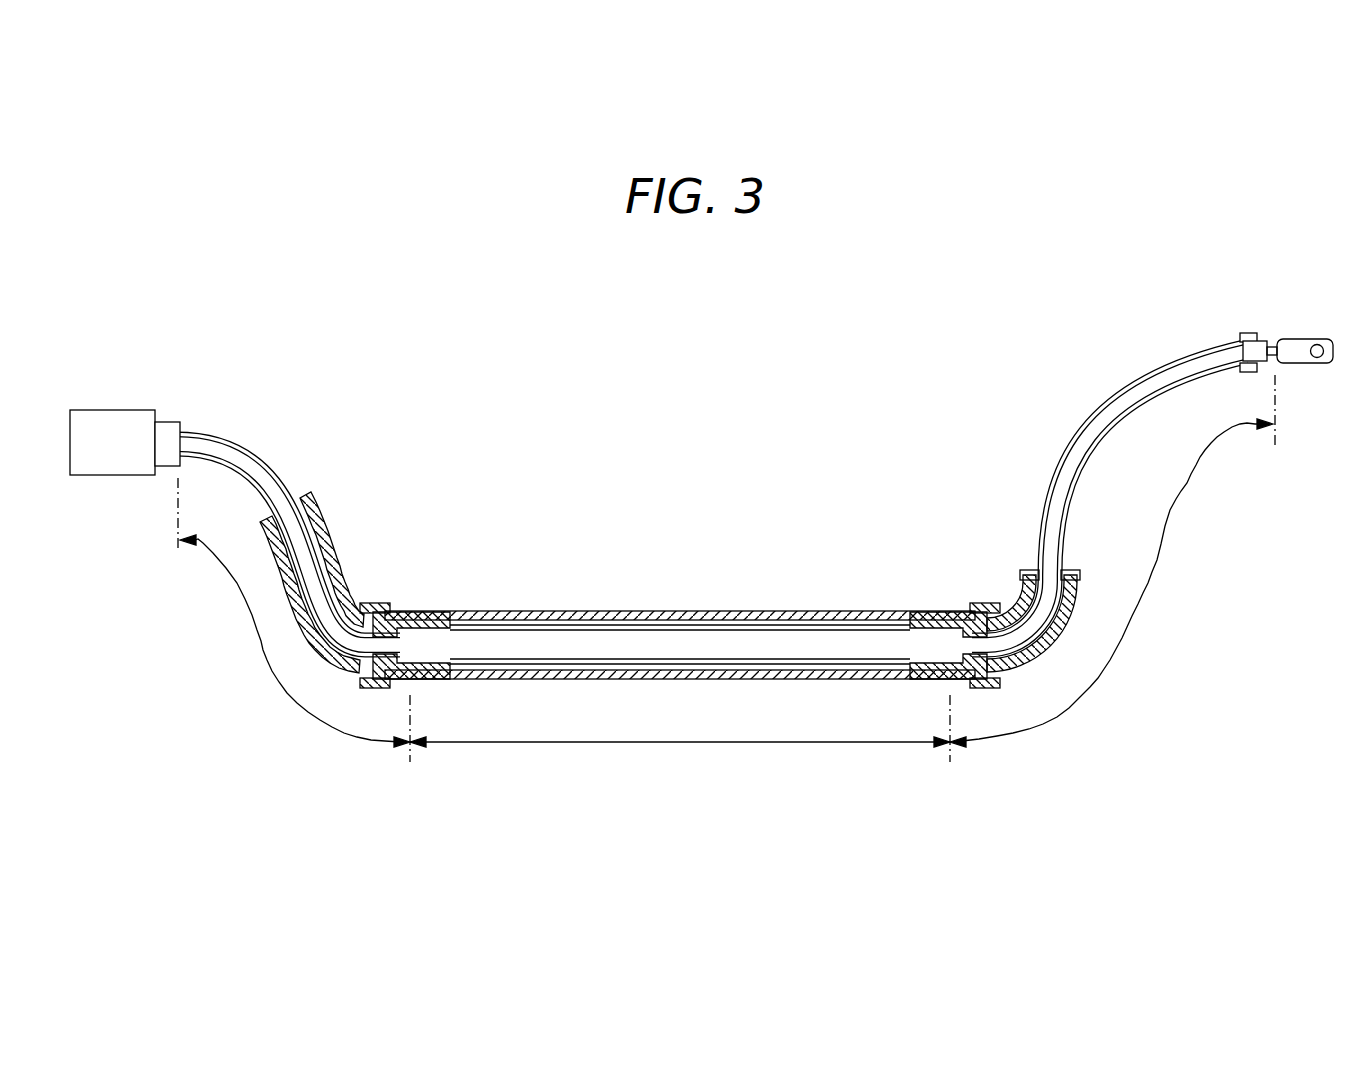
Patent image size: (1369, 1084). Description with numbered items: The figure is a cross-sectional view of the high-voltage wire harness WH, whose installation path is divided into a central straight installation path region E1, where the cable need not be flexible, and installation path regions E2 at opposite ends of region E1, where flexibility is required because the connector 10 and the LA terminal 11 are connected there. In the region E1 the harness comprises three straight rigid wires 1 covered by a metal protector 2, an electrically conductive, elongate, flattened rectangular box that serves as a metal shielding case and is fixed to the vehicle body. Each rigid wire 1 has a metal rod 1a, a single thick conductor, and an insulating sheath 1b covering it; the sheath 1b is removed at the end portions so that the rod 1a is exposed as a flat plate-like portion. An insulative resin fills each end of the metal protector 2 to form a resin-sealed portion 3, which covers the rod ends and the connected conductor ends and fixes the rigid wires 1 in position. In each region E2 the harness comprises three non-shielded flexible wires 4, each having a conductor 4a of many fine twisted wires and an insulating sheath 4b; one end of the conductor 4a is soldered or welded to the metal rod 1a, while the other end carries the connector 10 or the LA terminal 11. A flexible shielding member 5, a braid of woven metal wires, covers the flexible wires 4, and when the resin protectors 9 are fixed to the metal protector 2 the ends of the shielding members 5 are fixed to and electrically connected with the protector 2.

The rigid wire 1 is at (680, 576).
The metal rod 1a is at (553, 643).
The insulating sheath 1b is at (596, 628).
The metal protector 2 is at (707, 612).
The resin-sealed portion 3 is at (413, 606).
The flexible wire 4 is at (280, 360).
The conductor 4a is at (218, 447).
The insulating sheath 4b is at (258, 453).
The flexible shielding member 5 is at (296, 482).
The resin protector 9 is at (339, 545).
The connector 10 is at (118, 418).
The LA terminal 11 is at (1289, 345).
The high-voltage wire harness WH is at (684, 458).
The straight installation path region E1 is at (690, 745).
The installation path region E2 is at (262, 651).